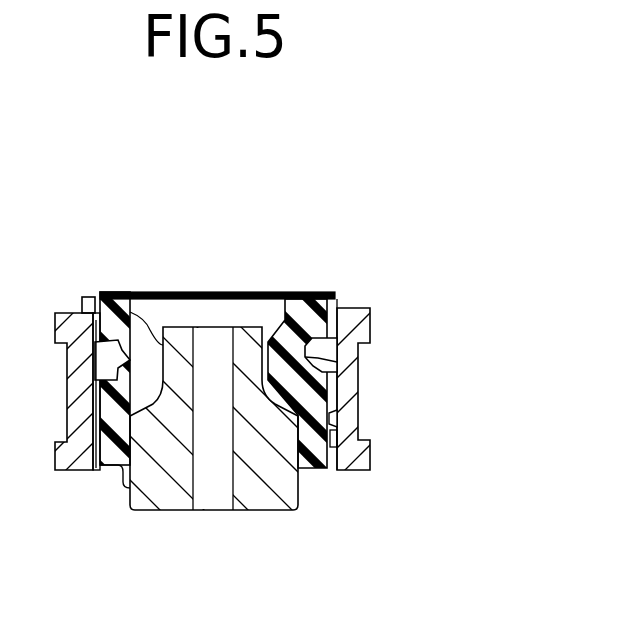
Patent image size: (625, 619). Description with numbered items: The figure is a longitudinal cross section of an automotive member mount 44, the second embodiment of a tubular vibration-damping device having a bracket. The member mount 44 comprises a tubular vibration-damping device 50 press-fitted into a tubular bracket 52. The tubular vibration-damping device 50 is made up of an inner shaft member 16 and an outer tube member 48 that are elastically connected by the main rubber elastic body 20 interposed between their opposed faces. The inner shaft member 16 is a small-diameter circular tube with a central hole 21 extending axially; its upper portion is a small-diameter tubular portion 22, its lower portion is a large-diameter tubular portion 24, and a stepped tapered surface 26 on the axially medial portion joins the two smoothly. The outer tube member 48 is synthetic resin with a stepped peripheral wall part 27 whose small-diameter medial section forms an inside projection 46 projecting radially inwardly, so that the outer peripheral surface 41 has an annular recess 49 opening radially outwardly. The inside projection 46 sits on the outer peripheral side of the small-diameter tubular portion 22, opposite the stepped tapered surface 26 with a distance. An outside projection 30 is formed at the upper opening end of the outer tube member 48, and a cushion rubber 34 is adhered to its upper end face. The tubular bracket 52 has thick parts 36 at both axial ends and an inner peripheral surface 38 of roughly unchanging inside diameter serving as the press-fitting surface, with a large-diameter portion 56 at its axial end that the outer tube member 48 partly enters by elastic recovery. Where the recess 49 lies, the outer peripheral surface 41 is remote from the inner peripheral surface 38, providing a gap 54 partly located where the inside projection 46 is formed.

The automotive member mount 44 is at (417, 208).
The tubular vibration-damping device 50 is at (354, 278).
The main rubber elastic body 20 is at (309, 292).
The small-diameter tubular portion 22 is at (250, 347).
The large-diameter tubular portion 24 is at (263, 498).
The central hole 21 is at (203, 492).
The inner shaft member 16 is at (128, 506).
The stepped tapered surface 26 is at (150, 380).
The outside projection 30 is at (85, 315).
The cushion rubber 34 is at (97, 297).
The peripheral wall part 27 is at (97, 398).
The gap 54 is at (100, 358).
The outer peripheral surface 41 is at (90, 410).
The outer tube member 48 is at (88, 455).
The thick part 36 is at (358, 330).
The tubular bracket 52 is at (368, 432).
The large-diameter portion 56 is at (334, 448).
The recess 49 is at (310, 348).
The inside projection 46 is at (310, 358).
The inner peripheral surface 38 is at (332, 415).